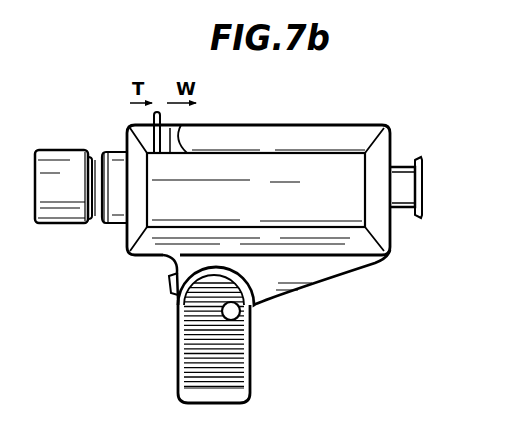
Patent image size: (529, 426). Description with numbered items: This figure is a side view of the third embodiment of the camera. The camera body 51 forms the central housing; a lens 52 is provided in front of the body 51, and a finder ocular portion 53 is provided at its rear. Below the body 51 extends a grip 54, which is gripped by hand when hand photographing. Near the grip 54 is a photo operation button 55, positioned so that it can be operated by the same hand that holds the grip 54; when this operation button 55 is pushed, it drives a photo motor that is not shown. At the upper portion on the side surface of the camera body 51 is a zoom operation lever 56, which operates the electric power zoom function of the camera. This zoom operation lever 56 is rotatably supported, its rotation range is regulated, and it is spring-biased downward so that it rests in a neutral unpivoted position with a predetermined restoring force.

The camera body 51 is at (285, 170).
The lens 52 is at (40, 195).
The finder ocular portion 53 is at (410, 167).
The grip 54 is at (238, 347).
The photo operation button 55 is at (169, 285).
The zoom operation lever 56 is at (129, 131).